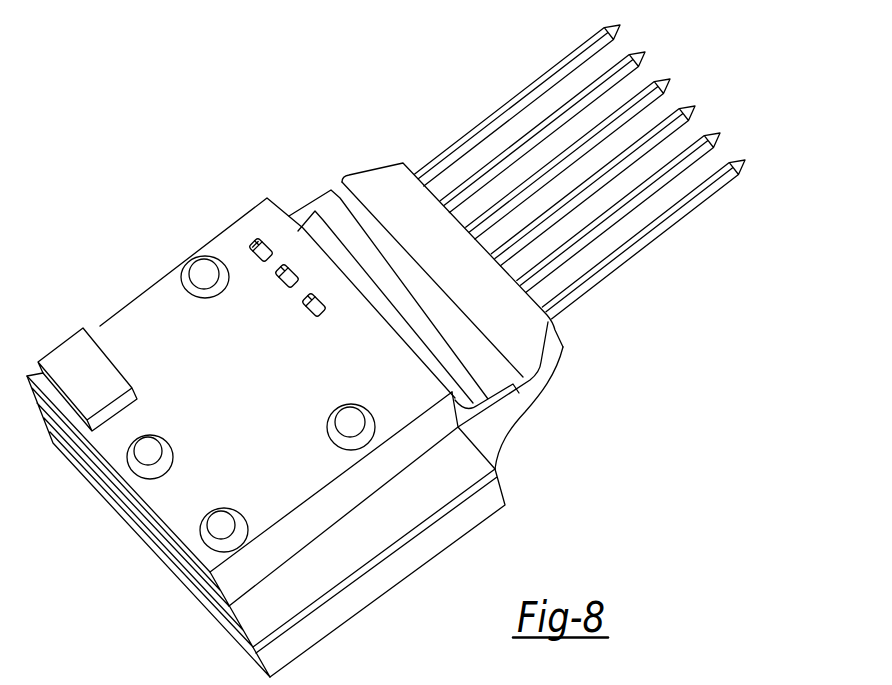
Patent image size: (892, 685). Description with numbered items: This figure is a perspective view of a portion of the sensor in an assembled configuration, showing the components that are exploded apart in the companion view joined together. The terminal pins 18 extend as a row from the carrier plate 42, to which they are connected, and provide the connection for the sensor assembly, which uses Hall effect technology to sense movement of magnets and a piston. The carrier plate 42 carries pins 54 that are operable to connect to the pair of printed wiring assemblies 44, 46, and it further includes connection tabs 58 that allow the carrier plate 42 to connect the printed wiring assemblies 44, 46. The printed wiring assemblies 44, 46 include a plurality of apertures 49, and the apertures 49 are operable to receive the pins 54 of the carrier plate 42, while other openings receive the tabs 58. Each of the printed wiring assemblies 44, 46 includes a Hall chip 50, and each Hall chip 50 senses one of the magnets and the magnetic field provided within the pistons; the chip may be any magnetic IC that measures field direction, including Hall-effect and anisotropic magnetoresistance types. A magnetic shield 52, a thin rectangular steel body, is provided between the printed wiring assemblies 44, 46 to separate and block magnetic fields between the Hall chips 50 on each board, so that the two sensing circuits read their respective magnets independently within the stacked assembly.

The terminal pins 18 is at (472, 128).
The carrier plate 42 is at (207, 584).
The printed wiring assembly 44 is at (148, 313).
The printed wiring assembly 46 is at (242, 643).
The apertures 49 is at (316, 294).
The Hall chip 50 is at (67, 363).
The magnetic shield 52 is at (222, 607).
The pins 54 is at (272, 255).
The connection tabs 58 is at (223, 523).